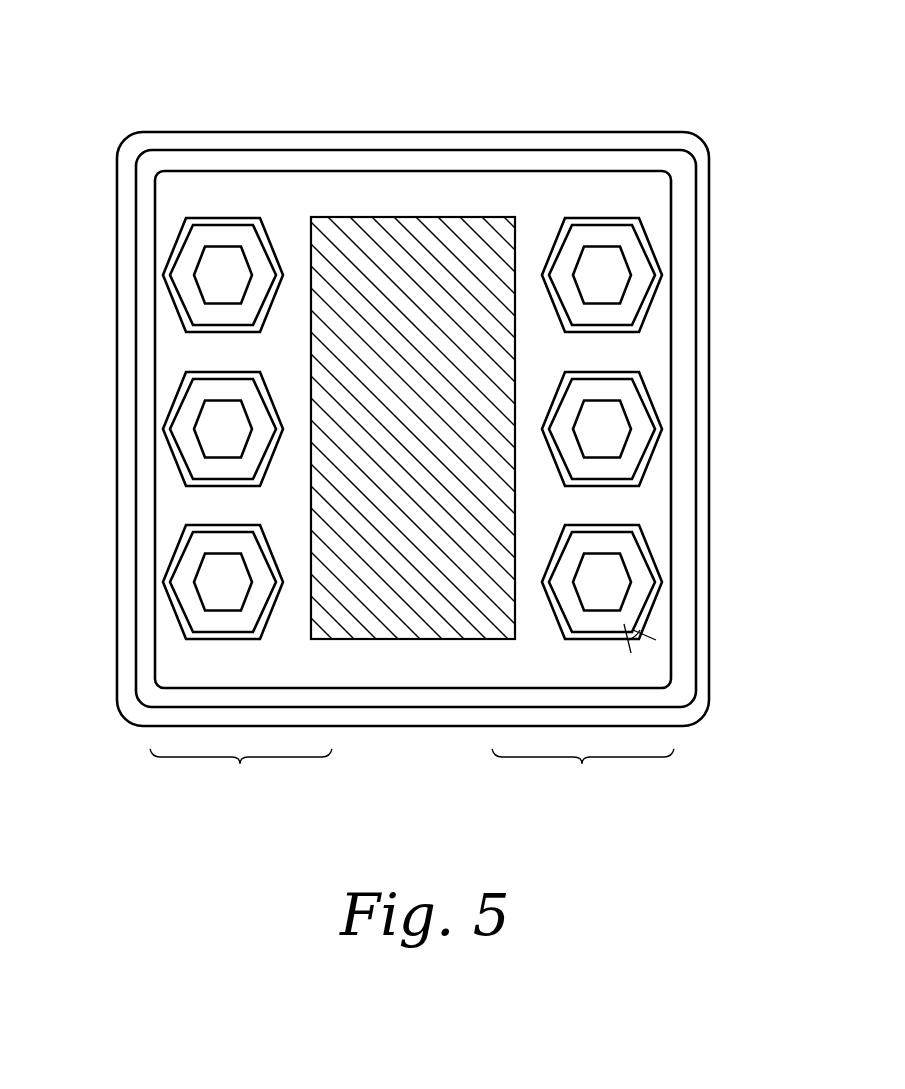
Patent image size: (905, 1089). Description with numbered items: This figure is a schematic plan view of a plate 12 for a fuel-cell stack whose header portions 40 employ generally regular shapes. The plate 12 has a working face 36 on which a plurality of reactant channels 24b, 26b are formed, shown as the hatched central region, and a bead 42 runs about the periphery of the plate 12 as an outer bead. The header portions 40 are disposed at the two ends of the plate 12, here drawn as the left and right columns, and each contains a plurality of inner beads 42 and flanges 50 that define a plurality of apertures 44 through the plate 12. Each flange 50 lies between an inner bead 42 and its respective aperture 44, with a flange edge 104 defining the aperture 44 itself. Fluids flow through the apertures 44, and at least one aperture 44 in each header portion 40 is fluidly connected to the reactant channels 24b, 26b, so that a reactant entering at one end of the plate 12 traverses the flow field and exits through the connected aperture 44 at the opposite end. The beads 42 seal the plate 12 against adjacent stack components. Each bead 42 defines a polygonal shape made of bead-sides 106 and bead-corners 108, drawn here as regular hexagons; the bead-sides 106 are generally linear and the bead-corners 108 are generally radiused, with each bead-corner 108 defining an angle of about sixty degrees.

The plate 12 is at (426, 422).
The reactant channel 24b is at (413, 346).
The reactant channel 26b is at (418, 255).
The working face 36 is at (424, 678).
The header portion 40 is at (412, 770).
The bead 42 is at (405, 419).
The aperture 44 is at (221, 266).
The flange 50 is at (190, 292).
The flange edge 104 is at (340, 338).
The bead-side 106 is at (413, 428).
The bead-corner 108 is at (184, 370).